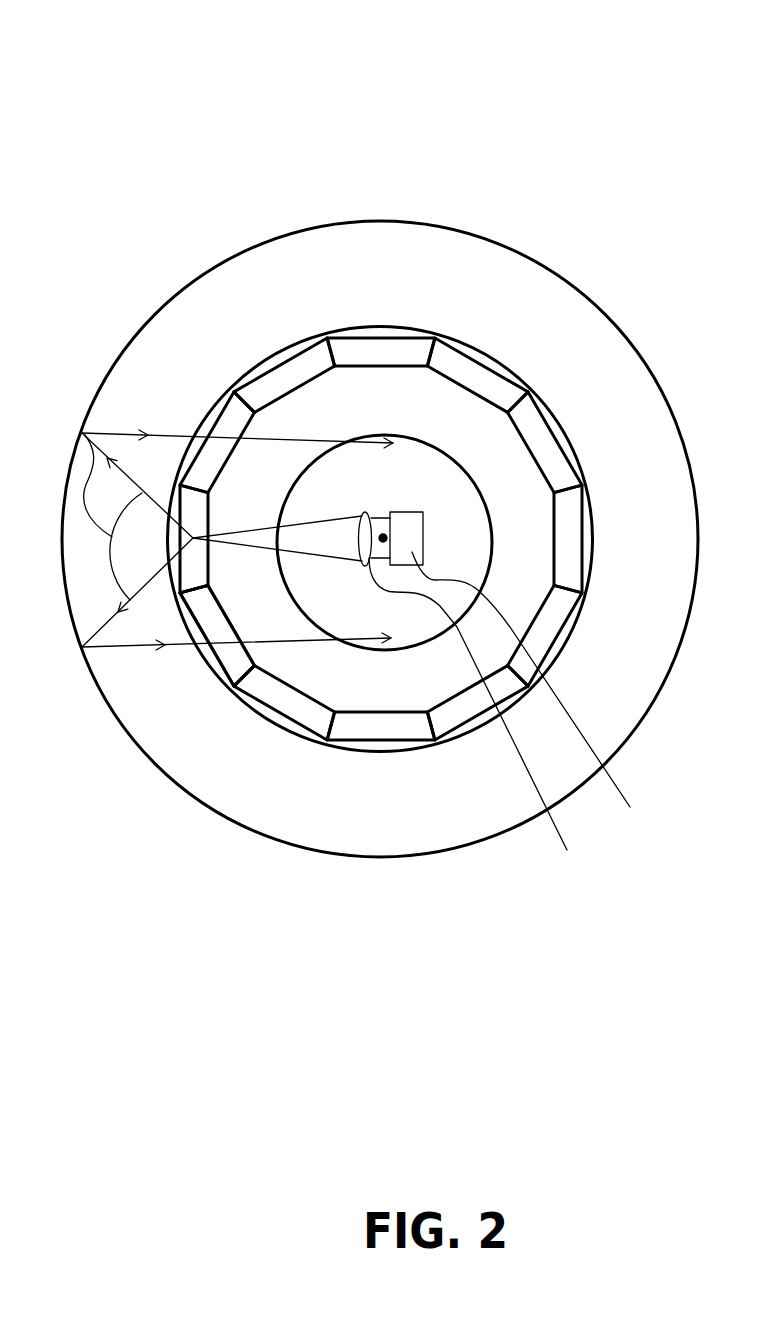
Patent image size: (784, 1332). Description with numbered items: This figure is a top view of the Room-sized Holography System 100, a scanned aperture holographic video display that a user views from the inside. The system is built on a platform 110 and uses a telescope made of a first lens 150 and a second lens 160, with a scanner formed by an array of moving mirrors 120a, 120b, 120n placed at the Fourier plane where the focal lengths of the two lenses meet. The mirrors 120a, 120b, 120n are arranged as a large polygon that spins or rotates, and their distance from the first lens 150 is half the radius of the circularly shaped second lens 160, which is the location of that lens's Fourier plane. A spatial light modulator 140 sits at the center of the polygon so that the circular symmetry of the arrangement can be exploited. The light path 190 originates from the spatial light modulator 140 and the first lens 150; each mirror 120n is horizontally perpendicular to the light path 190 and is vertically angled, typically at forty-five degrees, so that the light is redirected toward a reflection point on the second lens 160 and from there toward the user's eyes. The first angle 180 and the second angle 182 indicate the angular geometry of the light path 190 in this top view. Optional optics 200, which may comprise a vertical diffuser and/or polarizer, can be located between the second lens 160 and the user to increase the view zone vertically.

The Room-sized Holography System 100 is at (184, 102).
The platform 110 is at (380, 539).
The mirror 120a is at (195, 518).
The mirror 120b is at (232, 420).
The mirror 120n is at (230, 662).
The spatial light modulator 140 is at (516, 673).
The first lens 150 is at (476, 695).
The second lens 160 is at (604, 353).
The first angle 180 is at (283, 546).
The second angle 182 is at (82, 433).
The light path 190 is at (312, 438).
The optional optics 200 is at (421, 443).